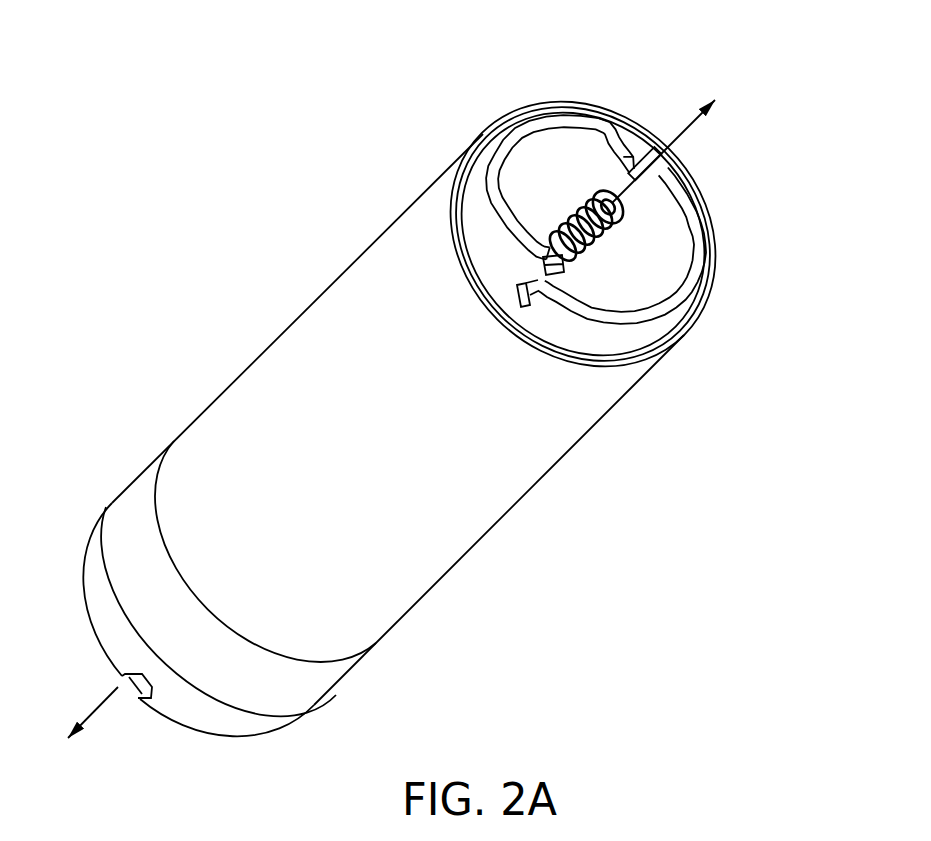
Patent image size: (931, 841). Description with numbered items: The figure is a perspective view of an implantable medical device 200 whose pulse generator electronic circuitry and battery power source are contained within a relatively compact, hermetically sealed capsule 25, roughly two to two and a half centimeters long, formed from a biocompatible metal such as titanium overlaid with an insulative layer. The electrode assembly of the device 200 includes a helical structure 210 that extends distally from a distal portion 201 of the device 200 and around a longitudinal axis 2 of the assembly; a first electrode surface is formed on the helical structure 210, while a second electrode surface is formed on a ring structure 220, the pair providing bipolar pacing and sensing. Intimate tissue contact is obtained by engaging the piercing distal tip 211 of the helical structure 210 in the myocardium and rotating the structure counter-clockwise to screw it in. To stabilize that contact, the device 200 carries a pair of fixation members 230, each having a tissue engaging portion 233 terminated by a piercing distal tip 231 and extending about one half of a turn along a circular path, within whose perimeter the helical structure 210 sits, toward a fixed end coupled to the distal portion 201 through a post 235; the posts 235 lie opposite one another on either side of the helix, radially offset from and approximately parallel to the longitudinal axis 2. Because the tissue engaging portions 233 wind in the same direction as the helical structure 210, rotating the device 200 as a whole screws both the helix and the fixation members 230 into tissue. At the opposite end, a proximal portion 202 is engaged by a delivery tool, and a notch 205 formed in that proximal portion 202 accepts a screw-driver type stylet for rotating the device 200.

The implantable medical device 200 is at (196, 186).
The distal portion 201 is at (446, 146).
The proximal portion 202 is at (79, 569).
The notch 205 is at (131, 697).
The helical structure 210 is at (637, 219).
The piercing distal tip 211 is at (627, 208).
The ring structure 220 is at (142, 522).
The fixation member 230 is at (520, 80).
The piercing distal tip 231 is at (660, 136).
The tissue engaging portion 233 is at (503, 144).
The post 235 is at (617, 133).
The hermetically sealed capsule 25 is at (336, 467).
The longitudinal axis 2 is at (690, 113).